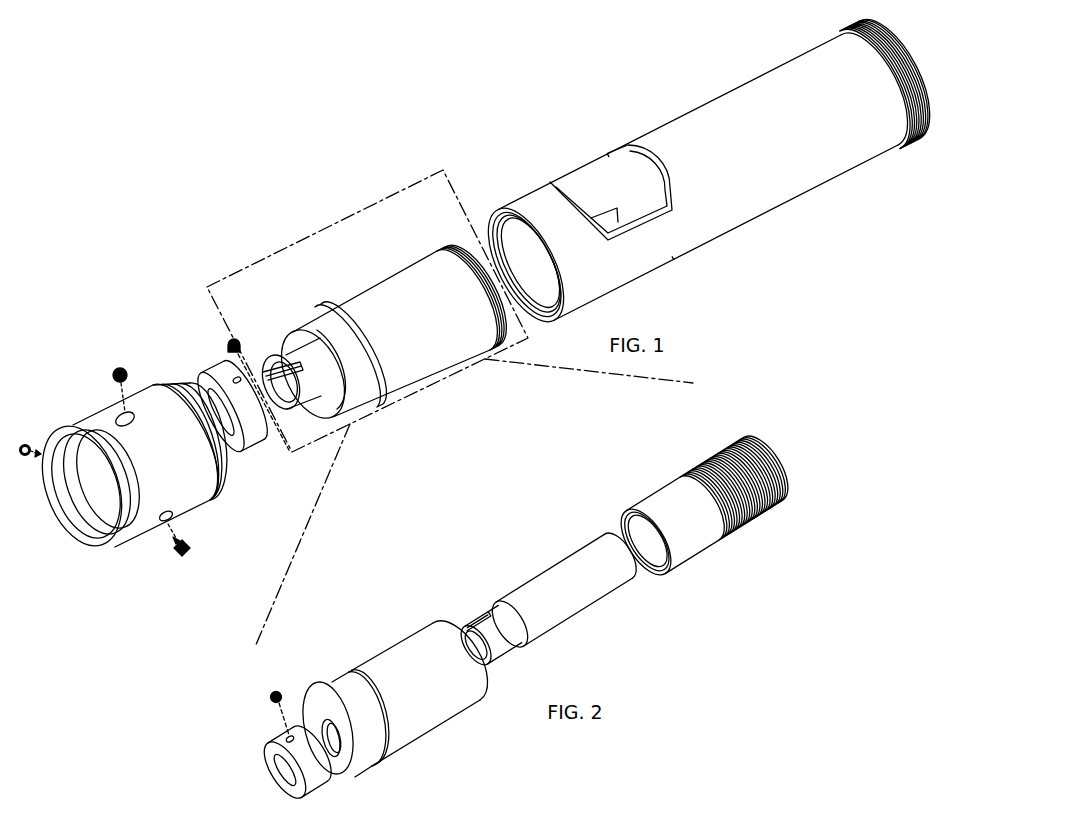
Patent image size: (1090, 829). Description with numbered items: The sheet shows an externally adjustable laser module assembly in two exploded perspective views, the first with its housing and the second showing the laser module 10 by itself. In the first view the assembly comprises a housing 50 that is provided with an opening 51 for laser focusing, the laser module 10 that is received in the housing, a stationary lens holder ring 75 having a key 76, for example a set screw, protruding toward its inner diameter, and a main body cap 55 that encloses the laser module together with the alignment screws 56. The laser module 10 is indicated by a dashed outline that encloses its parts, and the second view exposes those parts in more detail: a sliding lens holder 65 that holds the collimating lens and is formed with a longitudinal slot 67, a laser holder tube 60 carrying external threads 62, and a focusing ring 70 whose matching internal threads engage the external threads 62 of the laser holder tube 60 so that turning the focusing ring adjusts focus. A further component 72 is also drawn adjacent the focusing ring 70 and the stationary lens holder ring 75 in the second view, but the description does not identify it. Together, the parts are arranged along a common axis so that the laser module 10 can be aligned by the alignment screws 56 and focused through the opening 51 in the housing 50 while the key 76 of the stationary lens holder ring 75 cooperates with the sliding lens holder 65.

In FIG. 1, the laser module 10 is at (333, 222).
In FIG. 1, the housing 50 is at (745, 116).
In FIG. 1, the opening 51 is at (595, 176).
In FIG. 1, the main body cap 55 is at (163, 428).
In FIG. 1, the alignment screws 56 is at (109, 361).
In FIG. 2, the laser holder tube 60 is at (675, 499).
In FIG. 2, the external threads 62 is at (726, 465).
In FIG. 1, the sliding lens holder 65 is at (328, 330).
In FIG. 2, the sliding lens holder 65 is at (562, 570).
In FIG. 1, the longitudinal slot 67 is at (283, 352).
In FIG. 2, the longitudinal slot 67 is at (481, 626).
In FIG. 1, the focusing ring 70 is at (413, 282).
In FIG. 2, the focusing ring 70 is at (396, 663).
In FIG. 2, the spacer ring 72 is at (322, 726).
In FIG. 1, the stationary lens holder ring 75 is at (258, 429).
In FIG. 2, the stationary lens holder ring 75 is at (272, 738).
In FIG. 1, the key 76 is at (236, 327).
In FIG. 2, the key 76 is at (276, 684).